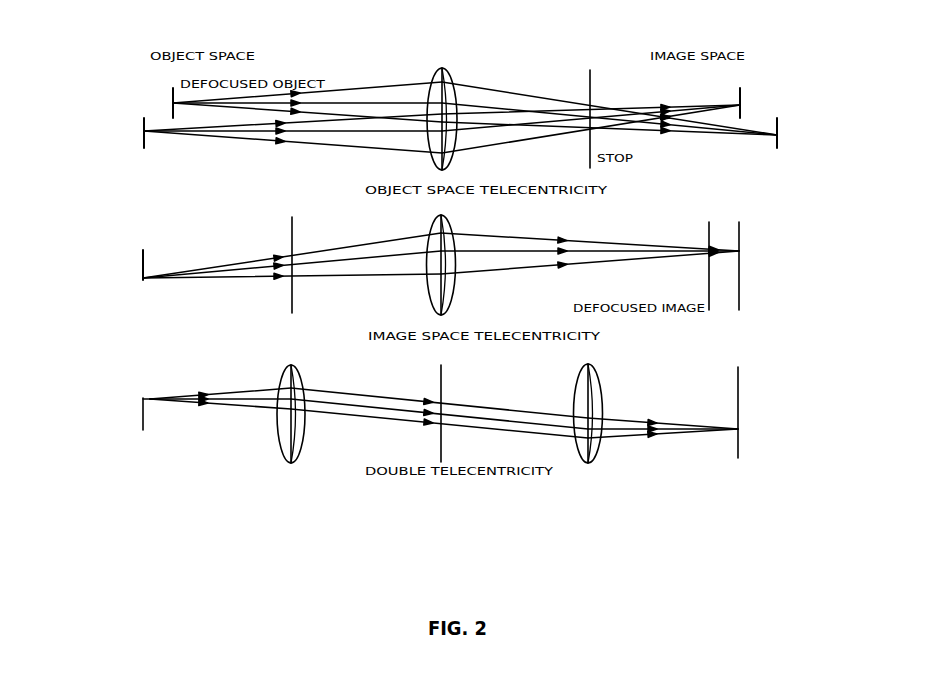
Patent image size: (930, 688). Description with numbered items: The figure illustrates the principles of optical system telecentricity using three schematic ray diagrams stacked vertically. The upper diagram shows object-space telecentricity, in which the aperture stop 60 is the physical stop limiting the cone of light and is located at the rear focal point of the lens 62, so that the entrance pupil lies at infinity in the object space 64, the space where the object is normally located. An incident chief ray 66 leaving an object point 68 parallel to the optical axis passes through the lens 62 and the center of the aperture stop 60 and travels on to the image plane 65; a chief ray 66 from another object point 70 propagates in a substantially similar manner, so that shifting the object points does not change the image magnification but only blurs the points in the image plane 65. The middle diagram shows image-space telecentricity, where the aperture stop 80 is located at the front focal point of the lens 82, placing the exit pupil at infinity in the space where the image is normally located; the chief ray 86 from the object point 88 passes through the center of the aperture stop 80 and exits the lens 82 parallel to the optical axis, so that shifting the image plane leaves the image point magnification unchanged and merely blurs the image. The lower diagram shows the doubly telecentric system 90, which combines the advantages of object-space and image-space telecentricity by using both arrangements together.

The aperture stop 60 is at (587, 98).
The lens 62 is at (447, 72).
The object space 64 is at (108, 79).
The image plane 65 is at (757, 82).
The chief ray 66 is at (357, 104).
The object point 68 is at (171, 100).
The object point 70 is at (142, 132).
The aperture stop 80 is at (279, 251).
The lens 82 is at (459, 291).
The chief ray 86 is at (540, 252).
The object point 88 is at (143, 280).
The doubly telecentric system 90 is at (600, 481).